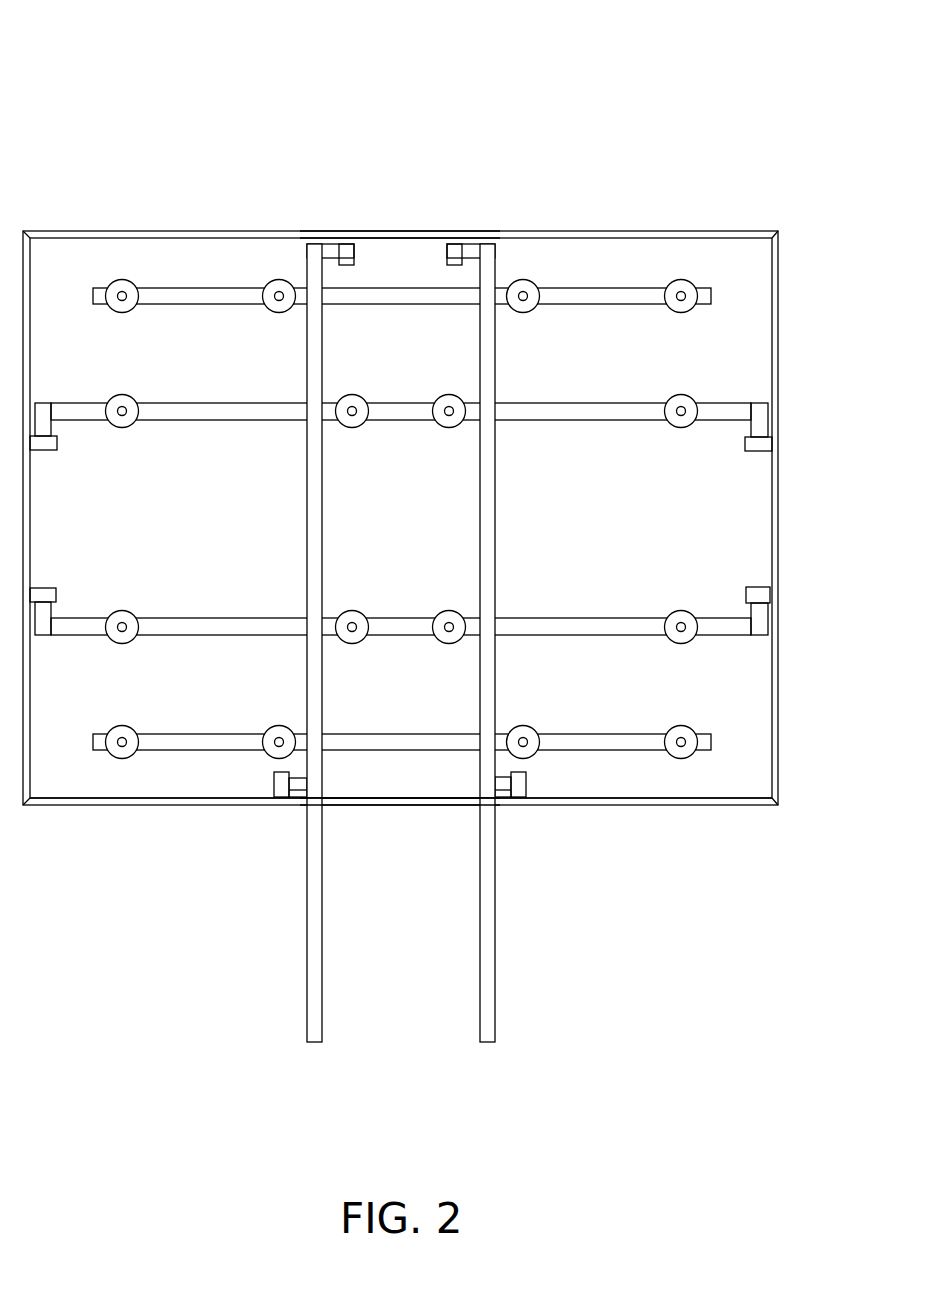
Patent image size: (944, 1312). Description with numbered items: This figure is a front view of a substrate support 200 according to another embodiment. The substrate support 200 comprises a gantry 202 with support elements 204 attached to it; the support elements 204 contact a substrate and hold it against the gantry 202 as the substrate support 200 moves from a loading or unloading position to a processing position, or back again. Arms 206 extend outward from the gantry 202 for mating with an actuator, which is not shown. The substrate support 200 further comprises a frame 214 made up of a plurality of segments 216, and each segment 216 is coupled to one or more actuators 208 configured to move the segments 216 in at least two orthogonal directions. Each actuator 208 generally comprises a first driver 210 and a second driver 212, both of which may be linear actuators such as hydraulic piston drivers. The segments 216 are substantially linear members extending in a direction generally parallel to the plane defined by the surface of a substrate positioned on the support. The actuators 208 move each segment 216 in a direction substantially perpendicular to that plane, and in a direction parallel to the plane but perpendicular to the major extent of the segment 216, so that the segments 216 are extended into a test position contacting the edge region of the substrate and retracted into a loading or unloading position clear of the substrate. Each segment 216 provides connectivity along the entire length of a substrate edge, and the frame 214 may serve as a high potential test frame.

The substrate support 200 is at (456, 546).
The gantry 202 is at (495, 558).
The support elements 204 is at (676, 427).
The arms 206 is at (495, 962).
The actuators 208 is at (498, 785).
The first driver 210 is at (762, 623).
The second driver 212 is at (760, 597).
The frame 214 is at (779, 699).
The segments 216 is at (122, 806).